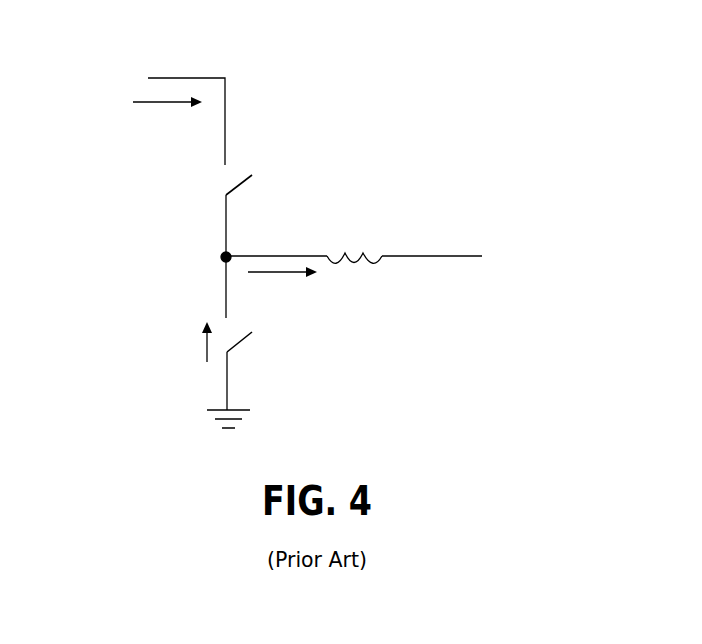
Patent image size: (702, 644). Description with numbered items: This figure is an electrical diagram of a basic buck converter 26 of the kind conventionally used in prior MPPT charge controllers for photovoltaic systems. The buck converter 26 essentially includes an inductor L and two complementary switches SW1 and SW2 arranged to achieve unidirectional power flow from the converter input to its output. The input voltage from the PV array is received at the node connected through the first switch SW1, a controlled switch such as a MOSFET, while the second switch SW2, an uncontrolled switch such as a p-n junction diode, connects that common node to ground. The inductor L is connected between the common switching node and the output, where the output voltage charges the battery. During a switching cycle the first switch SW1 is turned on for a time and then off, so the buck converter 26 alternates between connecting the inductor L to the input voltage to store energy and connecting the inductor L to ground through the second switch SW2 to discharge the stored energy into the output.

The buck converter 26 is at (357, 167).
The inductor L is at (362, 277).
The first switch SW1 is at (260, 183).
The second switch SW2 is at (260, 336).